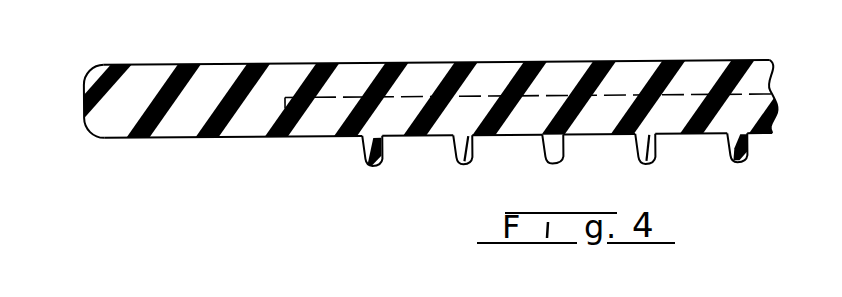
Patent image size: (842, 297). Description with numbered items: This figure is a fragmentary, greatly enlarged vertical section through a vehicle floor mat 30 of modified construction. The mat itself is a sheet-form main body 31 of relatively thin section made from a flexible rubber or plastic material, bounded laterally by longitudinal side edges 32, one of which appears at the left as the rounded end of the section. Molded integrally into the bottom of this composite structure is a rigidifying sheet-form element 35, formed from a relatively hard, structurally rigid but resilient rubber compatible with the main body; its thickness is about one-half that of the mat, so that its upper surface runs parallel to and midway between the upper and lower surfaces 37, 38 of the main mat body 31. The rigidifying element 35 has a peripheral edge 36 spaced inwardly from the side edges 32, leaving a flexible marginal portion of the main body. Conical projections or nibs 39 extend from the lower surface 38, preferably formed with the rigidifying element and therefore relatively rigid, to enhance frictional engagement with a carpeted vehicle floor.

The vehicle floor mat 30 is at (428, 100).
The main body 31 is at (230, 76).
The longitudinal side edges 32 is at (86, 89).
The rigidifying sheet-form element 35 is at (408, 94).
The peripheral edge 36 is at (539, 84).
The upper surface 37 is at (288, 64).
The lower surface 38 is at (213, 139).
The conical projections or nibs 39 is at (455, 164).